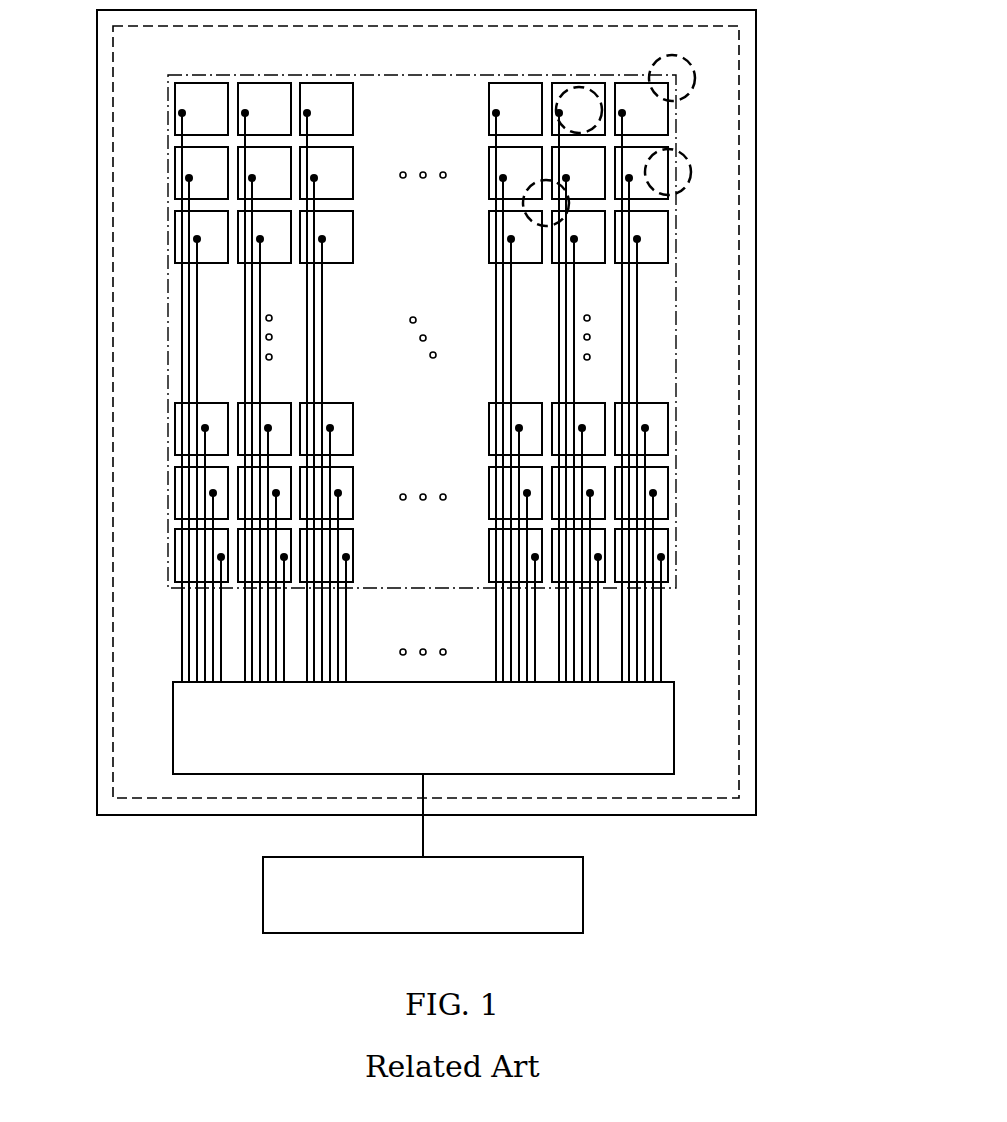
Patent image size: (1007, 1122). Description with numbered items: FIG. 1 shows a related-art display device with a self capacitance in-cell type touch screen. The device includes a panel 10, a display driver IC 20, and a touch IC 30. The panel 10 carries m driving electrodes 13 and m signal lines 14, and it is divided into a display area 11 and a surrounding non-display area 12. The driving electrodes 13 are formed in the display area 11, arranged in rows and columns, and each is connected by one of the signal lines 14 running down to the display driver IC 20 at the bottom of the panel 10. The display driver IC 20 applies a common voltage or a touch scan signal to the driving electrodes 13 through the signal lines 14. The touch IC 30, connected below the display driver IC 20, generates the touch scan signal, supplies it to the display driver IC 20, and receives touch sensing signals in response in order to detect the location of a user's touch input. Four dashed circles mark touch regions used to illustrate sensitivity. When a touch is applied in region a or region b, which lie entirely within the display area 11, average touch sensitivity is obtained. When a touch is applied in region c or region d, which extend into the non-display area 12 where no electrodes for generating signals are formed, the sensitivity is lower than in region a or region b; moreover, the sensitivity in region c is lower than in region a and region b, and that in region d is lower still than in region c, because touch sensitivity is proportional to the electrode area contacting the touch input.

The panel 10 is at (756, 70).
The display area 11 is at (676, 285).
The non-display area 12 is at (739, 400).
The driving electrodes 13 is at (175, 100).
The signal lines 14 is at (182, 297).
The display driver IC 20 is at (674, 733).
The touch IC 30 is at (583, 893).
The region a is at (546, 203).
The region b is at (579, 110).
The region c is at (668, 172).
The region d is at (672, 78).